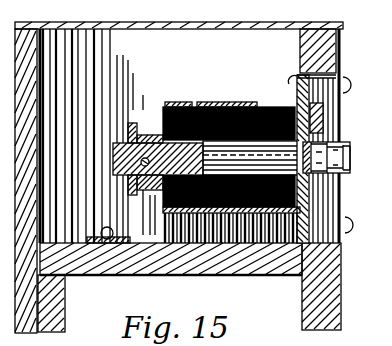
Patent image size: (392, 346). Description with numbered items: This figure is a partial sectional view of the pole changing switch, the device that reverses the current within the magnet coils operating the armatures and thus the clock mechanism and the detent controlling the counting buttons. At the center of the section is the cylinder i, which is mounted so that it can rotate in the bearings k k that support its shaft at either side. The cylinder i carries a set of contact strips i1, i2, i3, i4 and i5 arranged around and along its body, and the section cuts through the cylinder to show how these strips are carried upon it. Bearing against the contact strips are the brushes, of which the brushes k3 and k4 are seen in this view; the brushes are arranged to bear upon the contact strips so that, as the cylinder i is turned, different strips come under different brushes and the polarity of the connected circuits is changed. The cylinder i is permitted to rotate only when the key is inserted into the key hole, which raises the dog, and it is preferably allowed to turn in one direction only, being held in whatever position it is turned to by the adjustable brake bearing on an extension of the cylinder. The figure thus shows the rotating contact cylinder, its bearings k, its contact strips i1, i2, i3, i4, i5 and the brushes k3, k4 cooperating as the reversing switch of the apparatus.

The cylinder i is at (161, 107).
The contact strip i1 is at (177, 102).
The contact strip i2 is at (210, 102).
The contact strip i3 is at (268, 100).
The contact strip i4 is at (170, 216).
The contact strip i5 is at (260, 243).
The bearing k is at (125, 210).
The brush k3 is at (246, 243).
The brush k4 is at (175, 243).